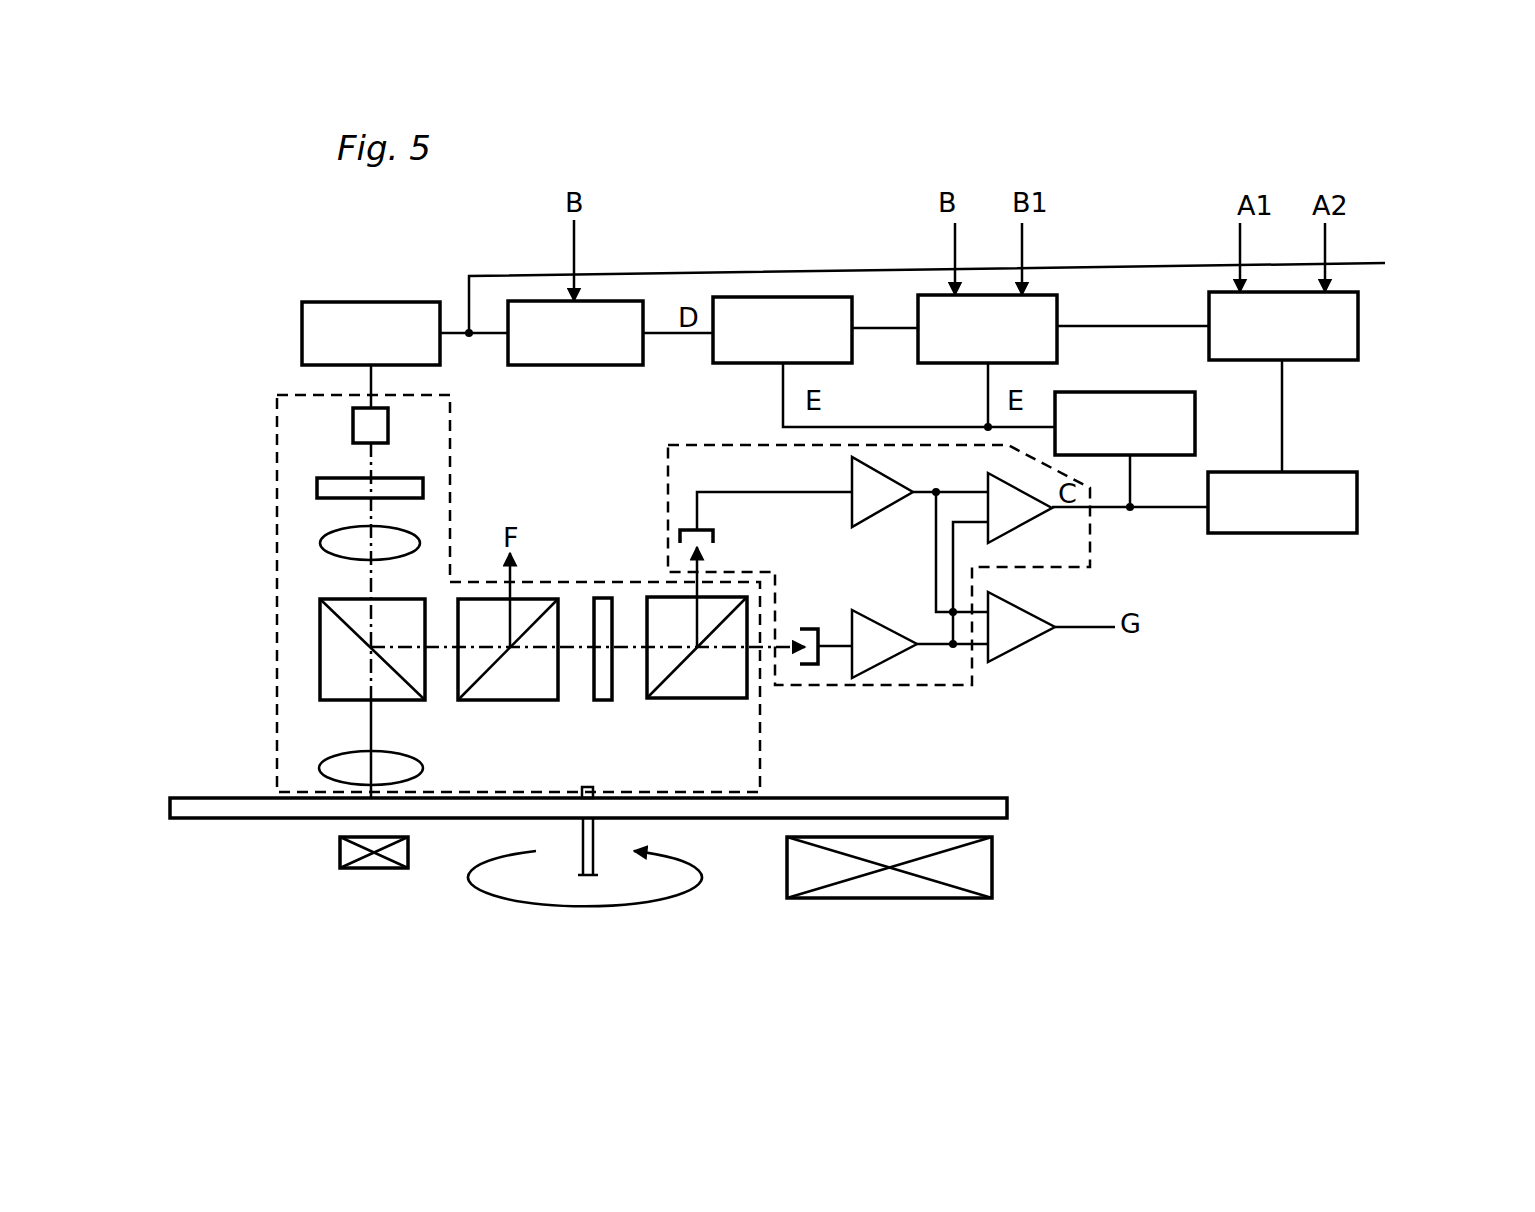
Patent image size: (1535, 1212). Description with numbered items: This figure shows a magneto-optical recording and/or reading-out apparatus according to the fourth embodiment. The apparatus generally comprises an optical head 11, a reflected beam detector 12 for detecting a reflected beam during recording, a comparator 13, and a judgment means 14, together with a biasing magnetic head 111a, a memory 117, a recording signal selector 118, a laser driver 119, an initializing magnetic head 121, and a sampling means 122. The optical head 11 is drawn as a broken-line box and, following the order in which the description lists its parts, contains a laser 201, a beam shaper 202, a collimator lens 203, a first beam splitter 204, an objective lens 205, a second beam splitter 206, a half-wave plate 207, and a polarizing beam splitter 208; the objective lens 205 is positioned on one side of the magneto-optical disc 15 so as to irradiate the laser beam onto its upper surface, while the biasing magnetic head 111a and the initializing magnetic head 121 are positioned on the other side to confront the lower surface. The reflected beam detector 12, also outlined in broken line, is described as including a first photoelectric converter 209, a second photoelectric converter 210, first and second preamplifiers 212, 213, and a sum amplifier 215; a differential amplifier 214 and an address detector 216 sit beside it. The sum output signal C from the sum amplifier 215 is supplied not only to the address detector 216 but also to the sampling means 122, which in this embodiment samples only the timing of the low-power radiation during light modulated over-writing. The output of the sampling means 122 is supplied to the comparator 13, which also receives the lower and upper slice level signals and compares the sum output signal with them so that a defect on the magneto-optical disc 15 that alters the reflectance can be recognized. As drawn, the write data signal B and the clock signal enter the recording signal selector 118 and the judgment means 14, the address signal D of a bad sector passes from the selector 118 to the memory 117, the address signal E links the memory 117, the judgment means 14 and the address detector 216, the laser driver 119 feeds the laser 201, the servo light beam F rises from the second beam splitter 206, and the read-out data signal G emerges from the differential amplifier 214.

The optical head 11 is at (452, 492).
The reflected beam detector 12 is at (973, 685).
The comparator 13 is at (1347, 362).
The judgment means 14 is at (1057, 313).
The magneto-optical disc 15 is at (197, 823).
The biasing magnetic head 111a is at (347, 868).
The memory 117 is at (767, 297).
The recording signal selector 118 is at (603, 300).
The laser driver 119 is at (373, 300).
The initializing magnetic head 121 is at (975, 898).
The sampling means 122 is at (1312, 535).
The semiconductor laser 201 is at (353, 428).
The wave plate 202 is at (317, 490).
The collimator lens 203 is at (320, 548).
The beam splitter 204 is at (320, 630).
The objective lens 205 is at (320, 770).
The beam splitter 206 is at (510, 700).
The half-wave plate 207 is at (602, 700).
The polarizing beam splitter 208 is at (698, 700).
The photodetector 209 is at (807, 665).
The photodetector 210 is at (680, 543).
The amplifier 212 is at (887, 660).
The amplifier 213 is at (870, 523).
The differential amplifier 214 is at (1023, 648).
The differential amplifier 215 is at (1037, 520).
The address detector 216 is at (1095, 392).